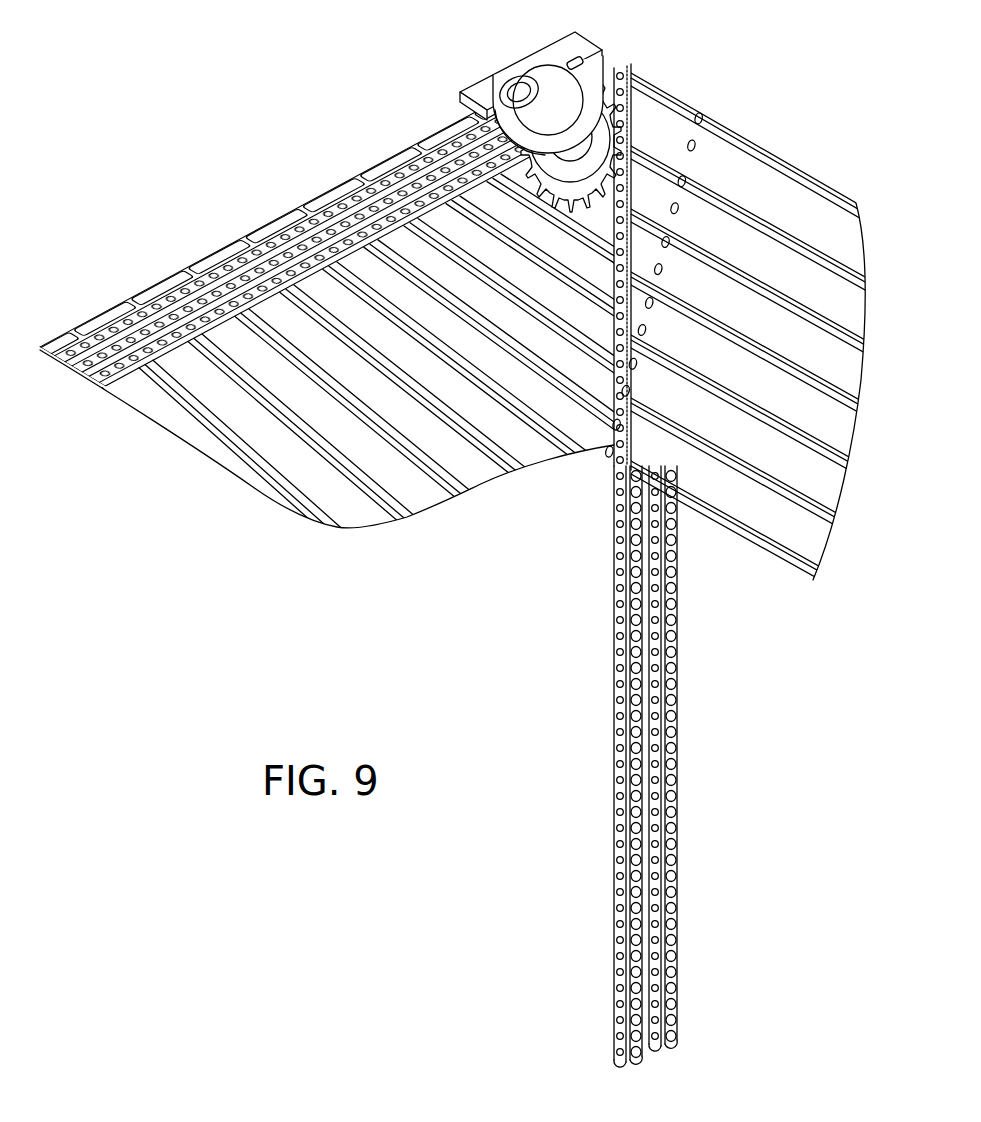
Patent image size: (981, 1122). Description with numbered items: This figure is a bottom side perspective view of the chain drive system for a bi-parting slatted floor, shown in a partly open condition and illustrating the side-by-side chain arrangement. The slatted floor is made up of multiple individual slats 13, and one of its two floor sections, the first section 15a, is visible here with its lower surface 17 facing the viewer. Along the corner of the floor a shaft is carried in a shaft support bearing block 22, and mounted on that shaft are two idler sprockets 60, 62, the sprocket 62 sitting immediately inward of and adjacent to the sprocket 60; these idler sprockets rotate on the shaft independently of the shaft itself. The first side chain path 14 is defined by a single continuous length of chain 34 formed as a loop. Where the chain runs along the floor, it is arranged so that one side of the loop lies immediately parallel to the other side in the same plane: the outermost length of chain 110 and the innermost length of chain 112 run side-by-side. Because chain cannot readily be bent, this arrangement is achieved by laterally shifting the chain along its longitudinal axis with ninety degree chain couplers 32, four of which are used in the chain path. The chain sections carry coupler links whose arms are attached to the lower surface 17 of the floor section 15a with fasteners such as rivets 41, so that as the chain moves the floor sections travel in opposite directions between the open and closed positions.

The slats 13 is at (853, 257).
The first side chain path 14 is at (709, 829).
The first section 15a is at (800, 150).
The lower surface 17 is at (408, 473).
The shaft support bearing block 22 is at (472, 88).
The 90 degree chain coupler 32 is at (668, 670).
The chain 34 is at (684, 584).
The rivets 41 is at (653, 243).
The idler sprocket 60 is at (598, 182).
The idler sprocket 62 is at (600, 198).
The outermost length of chain 110 is at (244, 250).
The innermost length of chain 112 is at (298, 252).